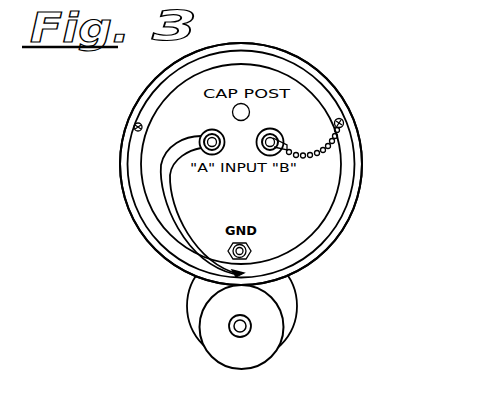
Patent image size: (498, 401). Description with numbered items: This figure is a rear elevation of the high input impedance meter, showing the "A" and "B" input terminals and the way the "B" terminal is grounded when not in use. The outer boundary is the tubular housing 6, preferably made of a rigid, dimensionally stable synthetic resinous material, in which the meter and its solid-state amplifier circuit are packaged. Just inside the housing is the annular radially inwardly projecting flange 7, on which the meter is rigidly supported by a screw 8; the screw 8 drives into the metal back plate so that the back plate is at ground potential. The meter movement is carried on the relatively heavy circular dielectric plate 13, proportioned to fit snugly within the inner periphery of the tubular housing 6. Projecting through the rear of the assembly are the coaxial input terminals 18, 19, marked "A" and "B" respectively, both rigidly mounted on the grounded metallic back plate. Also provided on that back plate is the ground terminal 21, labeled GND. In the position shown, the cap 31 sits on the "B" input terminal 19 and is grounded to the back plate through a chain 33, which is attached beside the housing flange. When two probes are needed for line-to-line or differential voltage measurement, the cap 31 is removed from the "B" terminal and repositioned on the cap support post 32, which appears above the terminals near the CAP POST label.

The tubular housing 6 is at (327, 82).
The annular radially inwardly projecting flange 7 is at (272, 63).
The screw 8 is at (134, 126).
The dielectric plate 13 is at (362, 196).
The coaxial input terminal 18 is at (203, 128).
The coaxial input terminal 19 is at (307, 126).
The ground terminal 21 is at (251, 250).
The cap 31 is at (258, 148).
The cap support post 32 is at (232, 111).
The chain 33 is at (316, 158).